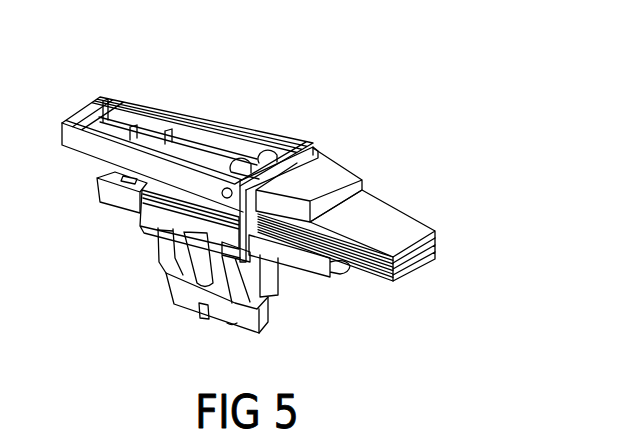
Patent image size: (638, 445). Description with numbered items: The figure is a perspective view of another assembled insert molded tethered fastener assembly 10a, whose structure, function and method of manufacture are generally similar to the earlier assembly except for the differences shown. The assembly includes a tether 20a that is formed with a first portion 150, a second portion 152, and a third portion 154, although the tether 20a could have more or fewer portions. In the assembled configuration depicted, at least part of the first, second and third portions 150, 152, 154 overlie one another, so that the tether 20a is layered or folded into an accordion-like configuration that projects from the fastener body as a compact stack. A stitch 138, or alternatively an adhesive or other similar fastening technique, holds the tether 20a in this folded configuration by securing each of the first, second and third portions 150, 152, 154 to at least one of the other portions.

The tethered fastener assembly 10a is at (329, 105).
The tether 20a is at (390, 193).
The stitch 138 is at (404, 233).
The first portion 150 is at (437, 232).
The second portion 152 is at (437, 241).
The third portion 154 is at (437, 249).